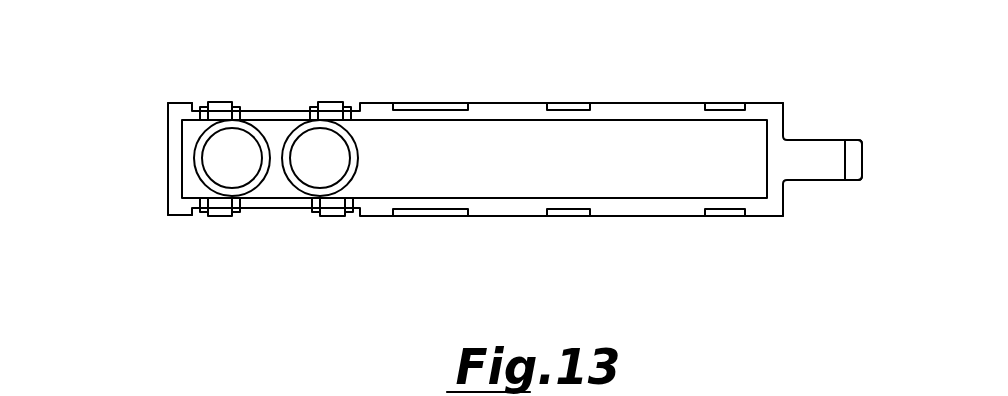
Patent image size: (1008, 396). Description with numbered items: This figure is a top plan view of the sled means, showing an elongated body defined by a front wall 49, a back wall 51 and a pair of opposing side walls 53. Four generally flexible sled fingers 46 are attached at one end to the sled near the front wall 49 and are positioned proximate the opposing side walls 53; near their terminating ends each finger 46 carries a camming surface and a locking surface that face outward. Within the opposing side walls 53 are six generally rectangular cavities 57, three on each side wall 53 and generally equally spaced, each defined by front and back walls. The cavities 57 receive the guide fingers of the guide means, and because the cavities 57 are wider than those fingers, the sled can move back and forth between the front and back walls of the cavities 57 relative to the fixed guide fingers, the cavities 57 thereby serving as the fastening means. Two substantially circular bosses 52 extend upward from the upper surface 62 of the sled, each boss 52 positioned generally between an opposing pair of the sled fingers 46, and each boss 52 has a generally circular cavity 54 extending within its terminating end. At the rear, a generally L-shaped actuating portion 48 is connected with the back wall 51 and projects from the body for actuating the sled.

The sled fingers 46 is at (215, 101).
The actuating portion 48 is at (827, 182).
The front wall 49 is at (167, 178).
The back wall 51 is at (787, 123).
The substantially circular bosses 52 is at (251, 119).
The opposing side walls 53 is at (765, 106).
The circular cavity 54 is at (240, 155).
The cavities 57 is at (715, 104).
The upper surface 62 is at (178, 112).